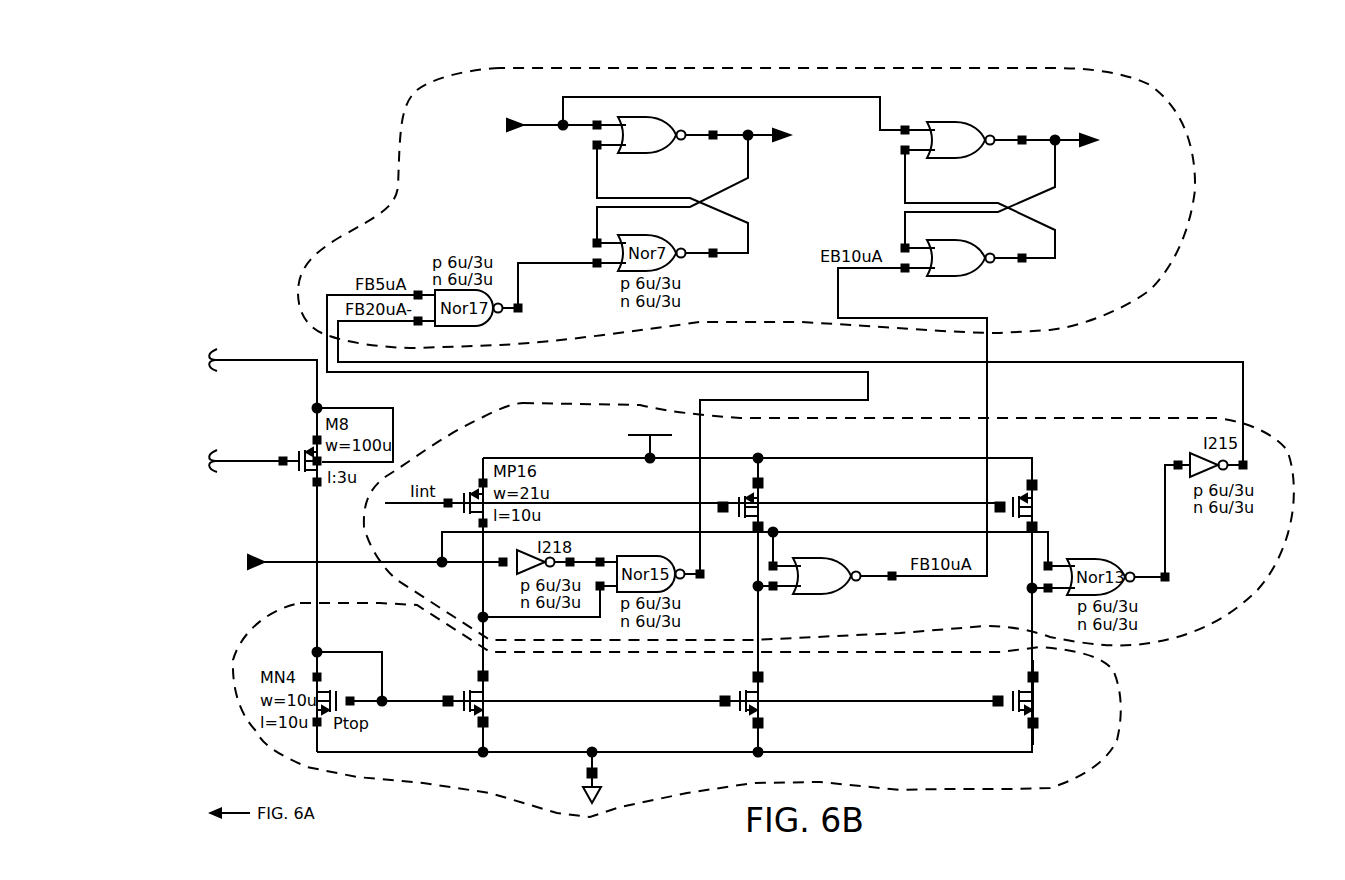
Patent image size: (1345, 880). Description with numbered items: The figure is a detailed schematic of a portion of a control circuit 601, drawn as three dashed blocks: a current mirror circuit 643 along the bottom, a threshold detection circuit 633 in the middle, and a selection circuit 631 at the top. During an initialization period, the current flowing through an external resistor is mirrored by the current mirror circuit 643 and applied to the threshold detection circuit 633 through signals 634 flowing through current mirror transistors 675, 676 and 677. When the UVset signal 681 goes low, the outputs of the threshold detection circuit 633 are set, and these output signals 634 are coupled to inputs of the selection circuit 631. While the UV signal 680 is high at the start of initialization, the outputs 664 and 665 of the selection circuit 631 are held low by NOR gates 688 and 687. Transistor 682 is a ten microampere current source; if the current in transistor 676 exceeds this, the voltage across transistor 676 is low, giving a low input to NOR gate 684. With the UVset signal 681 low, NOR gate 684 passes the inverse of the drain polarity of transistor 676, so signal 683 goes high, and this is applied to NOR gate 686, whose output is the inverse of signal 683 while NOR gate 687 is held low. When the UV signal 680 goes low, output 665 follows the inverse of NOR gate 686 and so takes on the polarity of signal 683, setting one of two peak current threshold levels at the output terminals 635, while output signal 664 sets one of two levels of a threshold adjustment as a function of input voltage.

The control circuit 601 is at (1210, 786).
The selection circuit 631 is at (548, 65).
The threshold detection circuit 633 is at (1278, 437).
The signals 634 is at (687, 363).
The output terminal 635 is at (779, 132).
The current mirror circuit 643 is at (258, 732).
The output signal 664 is at (826, 158).
The output signal 665 is at (1135, 163).
The current mirror transistor 675 is at (471, 716).
The current mirror transistor 676 is at (748, 717).
The current mirror transistor 677 is at (1022, 717).
The UV signal 680 is at (478, 112).
The UVset signal 681 is at (219, 549).
The transistor 682 is at (751, 497).
The signal 683 is at (978, 521).
The NOR gate 684 is at (842, 588).
The NOR gate 686 is at (980, 272).
The NOR gate 687 is at (975, 128).
The NOR gate 688 is at (668, 125).